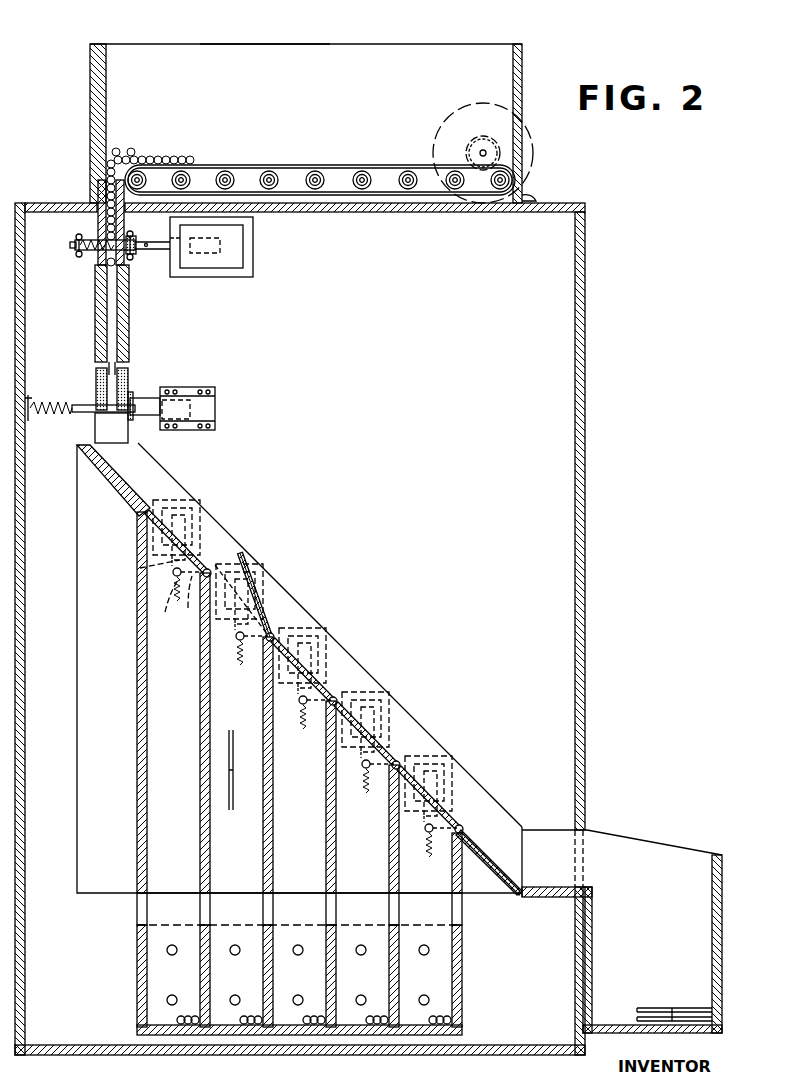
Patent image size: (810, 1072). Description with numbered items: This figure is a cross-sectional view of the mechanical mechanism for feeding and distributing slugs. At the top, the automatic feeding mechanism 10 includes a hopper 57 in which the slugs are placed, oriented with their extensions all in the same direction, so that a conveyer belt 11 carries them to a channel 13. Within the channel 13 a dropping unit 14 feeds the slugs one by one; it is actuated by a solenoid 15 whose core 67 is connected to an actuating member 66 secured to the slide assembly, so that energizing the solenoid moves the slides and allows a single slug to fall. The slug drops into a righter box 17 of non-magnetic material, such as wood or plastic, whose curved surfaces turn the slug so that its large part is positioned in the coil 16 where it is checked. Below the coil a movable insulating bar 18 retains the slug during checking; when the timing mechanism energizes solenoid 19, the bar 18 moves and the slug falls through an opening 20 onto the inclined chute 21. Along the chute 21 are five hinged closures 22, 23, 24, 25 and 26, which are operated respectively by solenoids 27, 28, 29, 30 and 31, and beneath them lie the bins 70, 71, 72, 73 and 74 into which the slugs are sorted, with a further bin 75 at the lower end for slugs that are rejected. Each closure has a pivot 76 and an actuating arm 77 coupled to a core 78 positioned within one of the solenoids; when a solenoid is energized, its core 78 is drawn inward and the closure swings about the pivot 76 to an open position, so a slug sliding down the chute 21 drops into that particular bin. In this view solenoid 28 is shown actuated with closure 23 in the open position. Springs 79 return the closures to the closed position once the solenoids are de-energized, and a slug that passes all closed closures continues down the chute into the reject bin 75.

The automatic feeding mechanism 10 is at (385, 72).
The hopper 57 is at (213, 58).
The conveyer belt 11 is at (287, 169).
The channel 13 is at (95, 200).
The actuating member 66 is at (82, 240).
The dropping unit 14 is at (88, 256).
The core 67 is at (165, 252).
The solenoid 15 is at (202, 268).
The righter box 17 is at (95, 304).
The coil 16 is at (96, 377).
The movable insulating bar 18 is at (136, 398).
The solenoid 19 is at (164, 392).
The opening 20 is at (92, 414).
The chute 21 is at (162, 476).
The hinged closure 22 is at (204, 566).
The hinged closure 23 is at (264, 612).
The hinged closure 24 is at (325, 676).
The hinged closure 25 is at (388, 740).
The hinged closure 26 is at (462, 812).
The solenoid 27 is at (190, 512).
The solenoid 28 is at (254, 580).
The solenoid 29 is at (313, 640).
The solenoid 30 is at (375, 694).
The solenoid 31 is at (444, 762).
The pivot 76 is at (243, 553).
The actuating arm 77 is at (188, 603).
The core 78 is at (146, 569).
The spring 79 is at (162, 607).
The bin 70 is at (173, 939).
The bin 71 is at (236, 939).
The bin 72 is at (299, 939).
The bin 73 is at (362, 939).
The bin 74 is at (425, 948).
The bin 75 is at (668, 952).